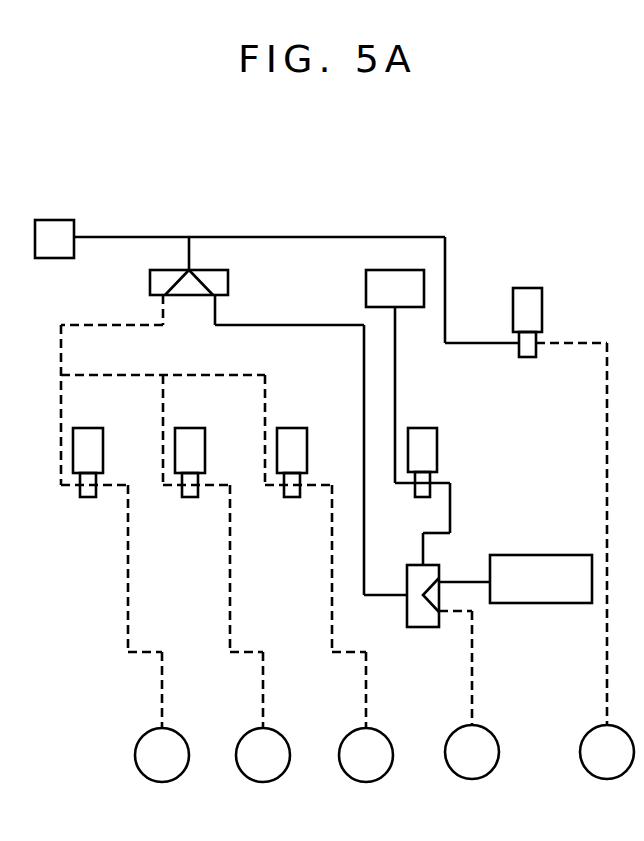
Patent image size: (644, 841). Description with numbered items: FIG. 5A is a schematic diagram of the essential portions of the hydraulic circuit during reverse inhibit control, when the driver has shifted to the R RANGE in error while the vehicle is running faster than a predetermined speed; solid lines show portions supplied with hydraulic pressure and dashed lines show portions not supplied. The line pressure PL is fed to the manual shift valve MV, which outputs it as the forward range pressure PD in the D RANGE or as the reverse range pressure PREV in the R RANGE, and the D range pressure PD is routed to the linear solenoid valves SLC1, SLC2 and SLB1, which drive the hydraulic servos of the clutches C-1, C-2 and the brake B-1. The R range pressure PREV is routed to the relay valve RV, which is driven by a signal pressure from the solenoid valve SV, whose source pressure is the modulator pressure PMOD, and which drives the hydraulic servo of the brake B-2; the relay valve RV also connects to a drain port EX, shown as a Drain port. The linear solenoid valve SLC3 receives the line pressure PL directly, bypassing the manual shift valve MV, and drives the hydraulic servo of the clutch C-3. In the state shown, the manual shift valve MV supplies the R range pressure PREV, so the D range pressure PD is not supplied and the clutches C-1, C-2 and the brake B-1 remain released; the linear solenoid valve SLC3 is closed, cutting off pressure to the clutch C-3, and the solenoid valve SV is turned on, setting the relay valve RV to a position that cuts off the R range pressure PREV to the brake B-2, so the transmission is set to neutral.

The line pressure PL is at (54, 239).
The manual shift valve MV is at (200, 270).
The forward range pressure (D range pressure) PD is at (137, 316).
The reverse range pressure (R range pressure) PREV is at (243, 316).
The D range D RANGE is at (110, 341).
The R range R RANGE is at (259, 341).
The modulator pressure PMOD is at (395, 288).
The linear solenoid valve SLC1 is at (91, 449).
The linear solenoid valve SLC2 is at (193, 449).
The linear solenoid valve SLB1 is at (295, 449).
The linear solenoid valve SLC3 is at (524, 310).
The solenoid valve SV is at (422, 449).
The relay valve RV is at (422, 609).
The drain port EX is at (467, 569).
The drain port Drain port is at (541, 579).
The clutch C-1 is at (162, 755).
The clutch C-2 is at (263, 755).
The brake B-1 is at (366, 755).
The brake B-2 is at (472, 752).
The clutch C-3 is at (607, 752).